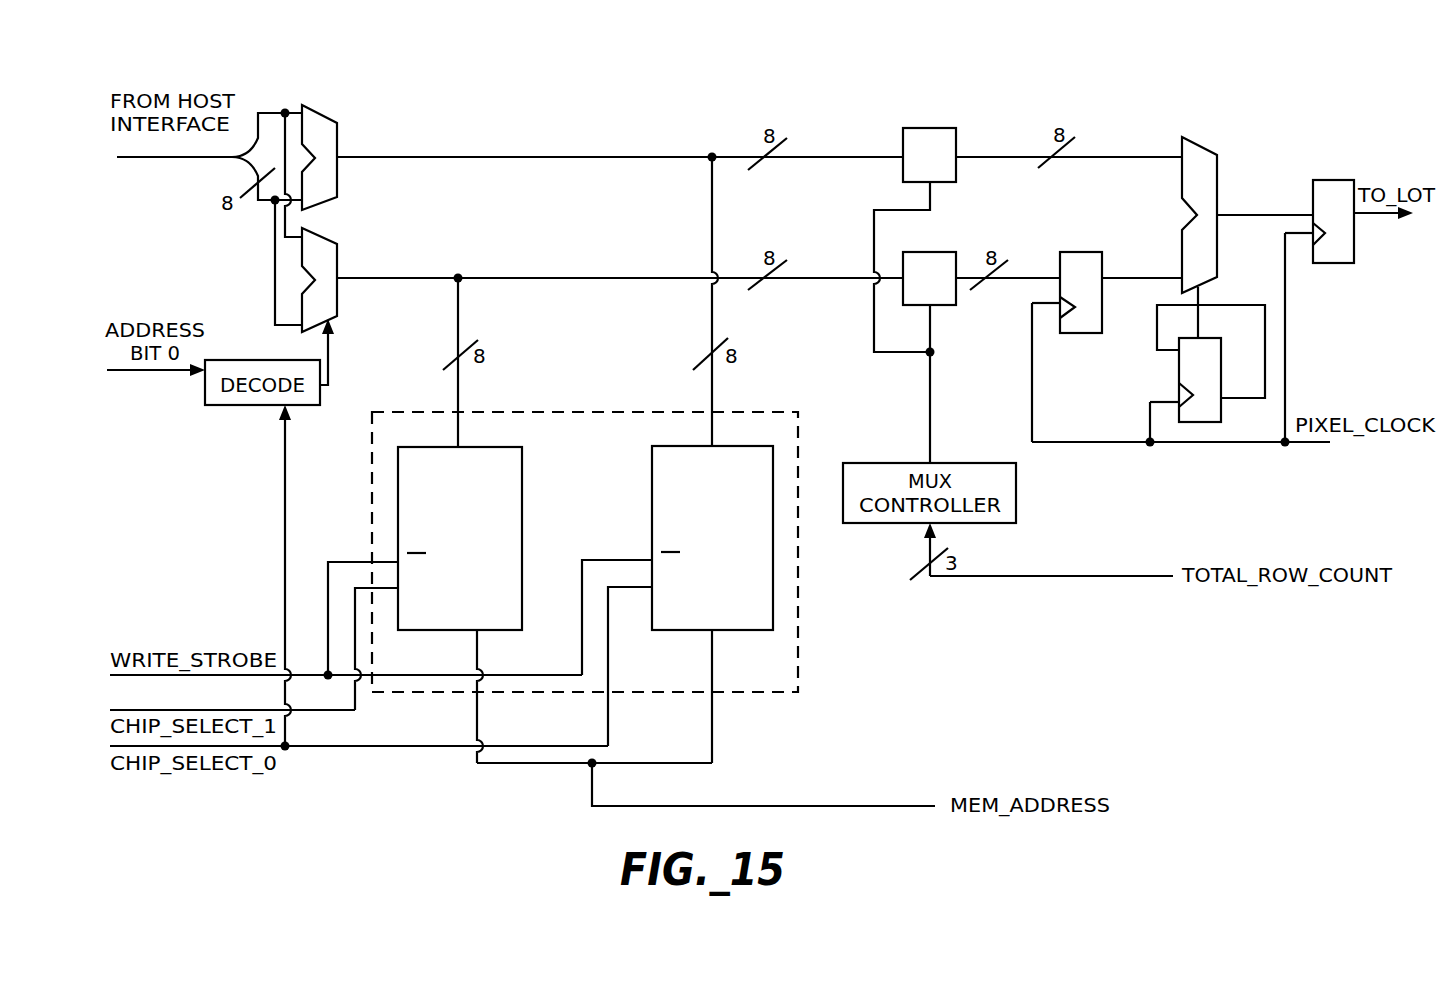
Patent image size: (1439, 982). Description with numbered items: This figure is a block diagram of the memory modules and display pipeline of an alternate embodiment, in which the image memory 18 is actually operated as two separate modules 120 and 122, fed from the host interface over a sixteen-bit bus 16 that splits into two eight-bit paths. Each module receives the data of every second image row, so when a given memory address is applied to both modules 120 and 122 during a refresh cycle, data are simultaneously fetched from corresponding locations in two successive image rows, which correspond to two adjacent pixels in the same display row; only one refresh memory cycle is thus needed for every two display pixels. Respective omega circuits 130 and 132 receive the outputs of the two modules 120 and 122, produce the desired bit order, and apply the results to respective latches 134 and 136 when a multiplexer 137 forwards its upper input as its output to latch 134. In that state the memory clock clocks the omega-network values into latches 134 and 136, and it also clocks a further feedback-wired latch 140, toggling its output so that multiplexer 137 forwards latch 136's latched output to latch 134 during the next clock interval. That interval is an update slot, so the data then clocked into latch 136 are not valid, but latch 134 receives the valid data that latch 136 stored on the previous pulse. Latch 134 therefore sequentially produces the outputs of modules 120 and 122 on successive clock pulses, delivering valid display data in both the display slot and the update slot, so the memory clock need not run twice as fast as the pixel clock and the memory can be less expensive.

The 16-bit host interface bus 16 is at (197, 142).
The image memory 18 is at (748, 410).
The memory module 120 is at (652, 475).
The memory module 122 is at (522, 478).
The omega circuit 130 is at (930, 128).
The omega circuit 132 is at (930, 252).
The latch 134 is at (1323, 180).
The latch 136 is at (1075, 252).
The multiplexer 137 is at (1187, 137).
The feedback-wired latch 140 is at (1241, 318).